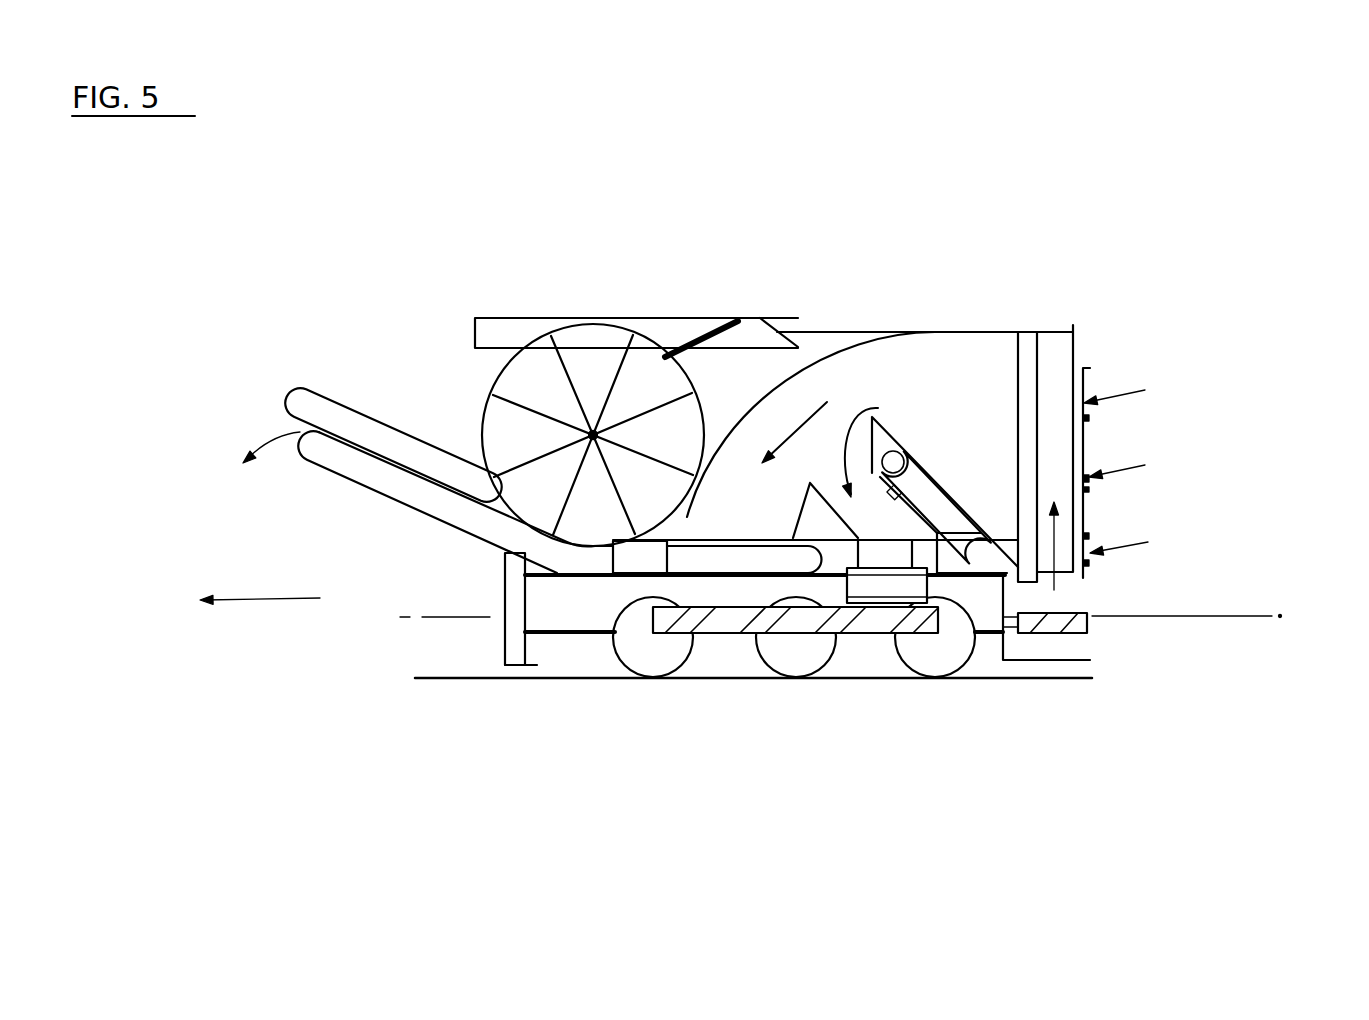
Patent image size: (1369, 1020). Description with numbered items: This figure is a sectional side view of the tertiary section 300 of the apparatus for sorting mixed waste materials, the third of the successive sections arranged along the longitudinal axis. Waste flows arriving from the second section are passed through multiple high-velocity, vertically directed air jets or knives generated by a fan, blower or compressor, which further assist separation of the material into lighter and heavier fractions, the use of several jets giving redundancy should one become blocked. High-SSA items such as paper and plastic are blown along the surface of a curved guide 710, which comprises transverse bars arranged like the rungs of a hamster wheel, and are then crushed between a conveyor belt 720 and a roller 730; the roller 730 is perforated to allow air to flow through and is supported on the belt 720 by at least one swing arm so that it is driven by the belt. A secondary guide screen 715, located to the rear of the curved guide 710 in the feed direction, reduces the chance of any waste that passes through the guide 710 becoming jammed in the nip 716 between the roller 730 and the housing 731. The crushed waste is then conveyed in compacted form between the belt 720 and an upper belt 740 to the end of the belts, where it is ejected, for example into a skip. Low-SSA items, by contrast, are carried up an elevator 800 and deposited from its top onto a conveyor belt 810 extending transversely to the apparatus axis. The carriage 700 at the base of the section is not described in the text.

The tertiary section 300 is at (1205, 158).
The carriage 700 is at (1042, 625).
The curved guide 710 is at (826, 381).
The secondary guide screen 715 is at (727, 338).
The nip 716 is at (640, 337).
The conveyor belt 720 is at (700, 547).
The roller 730 is at (535, 338).
The housing 731 is at (576, 318).
The upper belt 740 is at (385, 430).
The elevator 800 is at (920, 465).
The conveyor belt 810 is at (877, 592).